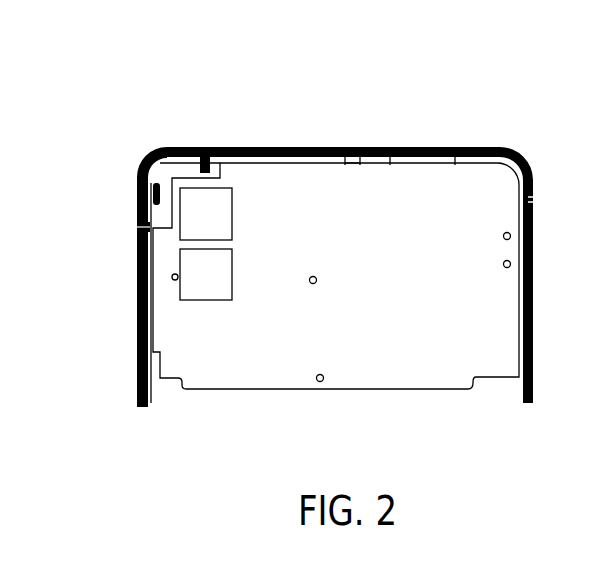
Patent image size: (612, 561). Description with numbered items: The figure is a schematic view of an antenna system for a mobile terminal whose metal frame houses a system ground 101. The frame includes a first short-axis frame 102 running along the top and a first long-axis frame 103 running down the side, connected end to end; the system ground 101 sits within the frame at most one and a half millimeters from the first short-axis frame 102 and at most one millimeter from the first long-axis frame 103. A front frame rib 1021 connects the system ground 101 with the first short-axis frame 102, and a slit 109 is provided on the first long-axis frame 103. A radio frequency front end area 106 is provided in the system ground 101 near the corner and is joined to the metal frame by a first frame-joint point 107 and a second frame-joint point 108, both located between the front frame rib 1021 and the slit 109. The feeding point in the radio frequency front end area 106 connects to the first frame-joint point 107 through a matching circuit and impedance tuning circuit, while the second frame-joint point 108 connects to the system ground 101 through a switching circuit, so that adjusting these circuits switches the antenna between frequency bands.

The system ground 101 is at (160, 338).
The first short-axis frame 102 is at (477, 152).
The front frame rib 1021 is at (359, 154).
The first long-axis frame 103 is at (137, 290).
The radio frequency front end area 106 is at (145, 190).
The first frame-joint point 107 is at (148, 178).
The second frame-joint point 108 is at (207, 154).
The slit 109 is at (138, 223).